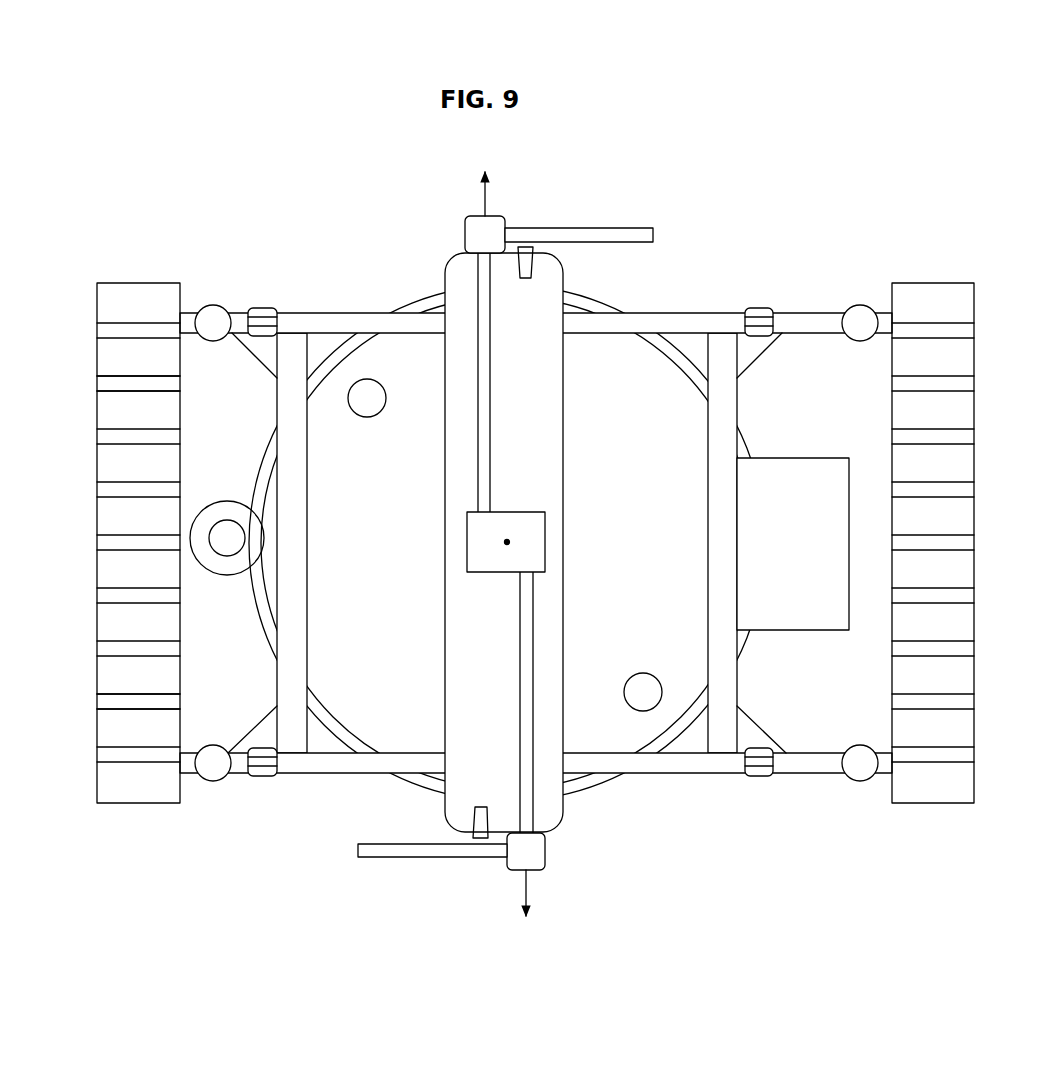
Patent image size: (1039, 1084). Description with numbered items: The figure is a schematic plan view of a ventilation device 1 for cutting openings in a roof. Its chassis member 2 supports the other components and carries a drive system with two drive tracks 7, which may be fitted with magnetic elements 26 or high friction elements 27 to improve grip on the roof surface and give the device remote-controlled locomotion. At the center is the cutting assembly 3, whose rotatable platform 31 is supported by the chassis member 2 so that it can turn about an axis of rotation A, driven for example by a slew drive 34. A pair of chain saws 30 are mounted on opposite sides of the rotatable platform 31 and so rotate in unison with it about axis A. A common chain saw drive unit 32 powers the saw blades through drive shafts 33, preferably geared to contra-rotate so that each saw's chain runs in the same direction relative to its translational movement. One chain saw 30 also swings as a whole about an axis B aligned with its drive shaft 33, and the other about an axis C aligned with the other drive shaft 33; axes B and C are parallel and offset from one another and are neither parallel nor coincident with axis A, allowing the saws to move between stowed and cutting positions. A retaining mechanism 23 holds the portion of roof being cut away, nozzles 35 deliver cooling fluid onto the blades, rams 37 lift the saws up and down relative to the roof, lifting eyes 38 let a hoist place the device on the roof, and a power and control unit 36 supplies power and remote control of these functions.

The ventilation device 1 is at (942, 214).
The chassis member 2 is at (690, 767).
The cutting assembly 3 is at (440, 250).
The drive tracks 7 is at (114, 515).
The retaining mechanism 23 is at (372, 416).
The magnetic elements 26 is at (118, 380).
The high friction elements 27 is at (125, 690).
The chain saws 30 is at (565, 230).
The rotatable platform 31 is at (631, 355).
The common chain saw drive unit 32 is at (510, 555).
The drive shafts 33 is at (492, 396).
The slew drive 34 is at (228, 501).
The nozzles 35 is at (536, 268).
The power and control unit 36 is at (803, 463).
The rams 37 is at (216, 306).
The lifting eyes 38 is at (262, 307).
The axis of rotation A is at (512, 541).
The axis B is at (488, 190).
The axis C is at (528, 889).